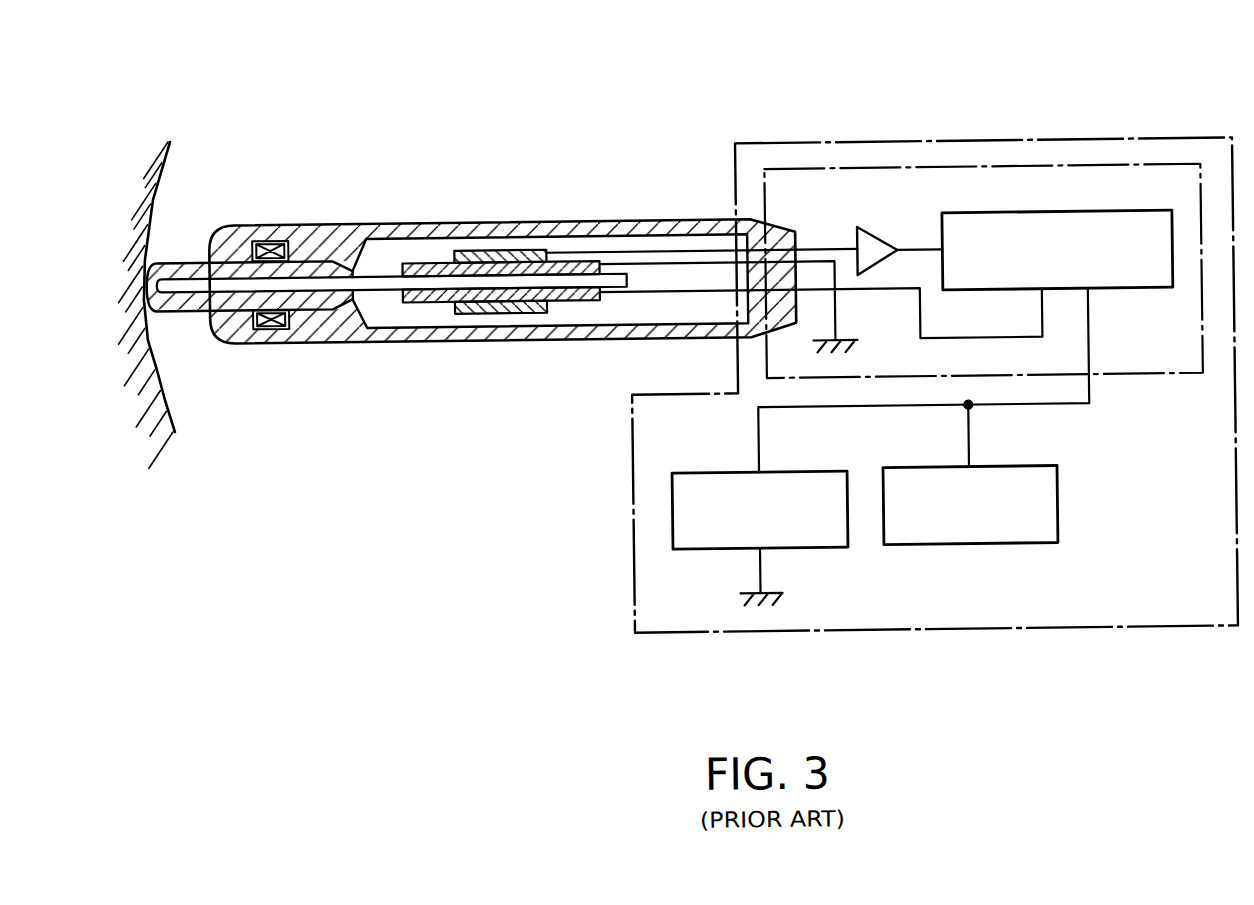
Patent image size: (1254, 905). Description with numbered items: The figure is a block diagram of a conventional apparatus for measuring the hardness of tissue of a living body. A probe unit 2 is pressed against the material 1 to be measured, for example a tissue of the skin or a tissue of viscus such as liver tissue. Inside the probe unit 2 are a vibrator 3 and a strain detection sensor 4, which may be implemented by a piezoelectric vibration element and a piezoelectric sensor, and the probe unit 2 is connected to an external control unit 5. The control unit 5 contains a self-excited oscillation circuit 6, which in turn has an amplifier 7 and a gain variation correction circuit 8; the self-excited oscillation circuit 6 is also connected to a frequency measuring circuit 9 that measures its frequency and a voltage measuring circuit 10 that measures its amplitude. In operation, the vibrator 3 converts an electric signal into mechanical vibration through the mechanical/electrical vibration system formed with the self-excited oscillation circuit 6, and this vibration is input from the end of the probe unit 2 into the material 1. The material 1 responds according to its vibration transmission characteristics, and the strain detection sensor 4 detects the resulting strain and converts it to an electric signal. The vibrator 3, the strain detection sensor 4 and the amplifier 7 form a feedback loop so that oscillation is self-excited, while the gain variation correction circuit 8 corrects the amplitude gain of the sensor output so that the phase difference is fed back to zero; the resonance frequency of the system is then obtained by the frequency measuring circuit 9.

The material to be measured 1 is at (165, 188).
The probe unit 2 is at (496, 217).
The vibrator 3 is at (435, 256).
The strain detection sensor 4 is at (502, 307).
The control unit 5 is at (1017, 628).
The self-excited oscillation circuit 6 is at (956, 167).
The amplifier 7 is at (847, 229).
The gain variation correction circuit 8 is at (1120, 212).
The frequency measuring circuit 9 is at (996, 468).
The voltage measuring circuit 10 is at (714, 470).